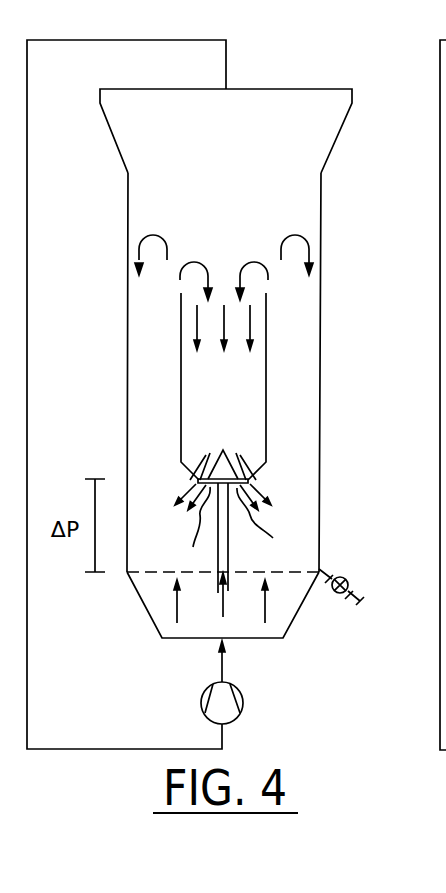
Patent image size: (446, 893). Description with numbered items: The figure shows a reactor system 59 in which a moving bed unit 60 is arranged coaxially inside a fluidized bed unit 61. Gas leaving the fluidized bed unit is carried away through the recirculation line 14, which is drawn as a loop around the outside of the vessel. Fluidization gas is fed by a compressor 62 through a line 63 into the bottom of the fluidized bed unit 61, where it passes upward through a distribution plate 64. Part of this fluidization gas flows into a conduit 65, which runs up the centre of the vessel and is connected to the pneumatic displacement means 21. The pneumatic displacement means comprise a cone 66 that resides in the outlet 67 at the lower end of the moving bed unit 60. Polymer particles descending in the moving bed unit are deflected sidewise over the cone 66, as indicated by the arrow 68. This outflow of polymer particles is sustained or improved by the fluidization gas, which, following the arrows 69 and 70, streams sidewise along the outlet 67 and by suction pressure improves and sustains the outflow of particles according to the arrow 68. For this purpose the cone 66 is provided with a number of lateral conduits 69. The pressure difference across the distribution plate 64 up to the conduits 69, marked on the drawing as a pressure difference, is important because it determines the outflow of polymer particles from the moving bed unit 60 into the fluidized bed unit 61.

The recirculation line 14 is at (72, 40).
The pneumatic displacement means 21 is at (200, 433).
The reactor system 59 is at (300, 65).
The moving bed unit 60 is at (266, 393).
The fluidized bed unit 61 is at (319, 505).
The compressor 62 is at (242, 698).
The line 63 is at (222, 668).
The distribution plate 64 is at (153, 573).
The conduit 65 is at (229, 545).
The cone 66 is at (222, 452).
The outlet 67 is at (247, 473).
The arrow 68 is at (197, 481).
The arrows / lateral conduits 69 is at (236, 450).
The arrows 70 is at (240, 529).